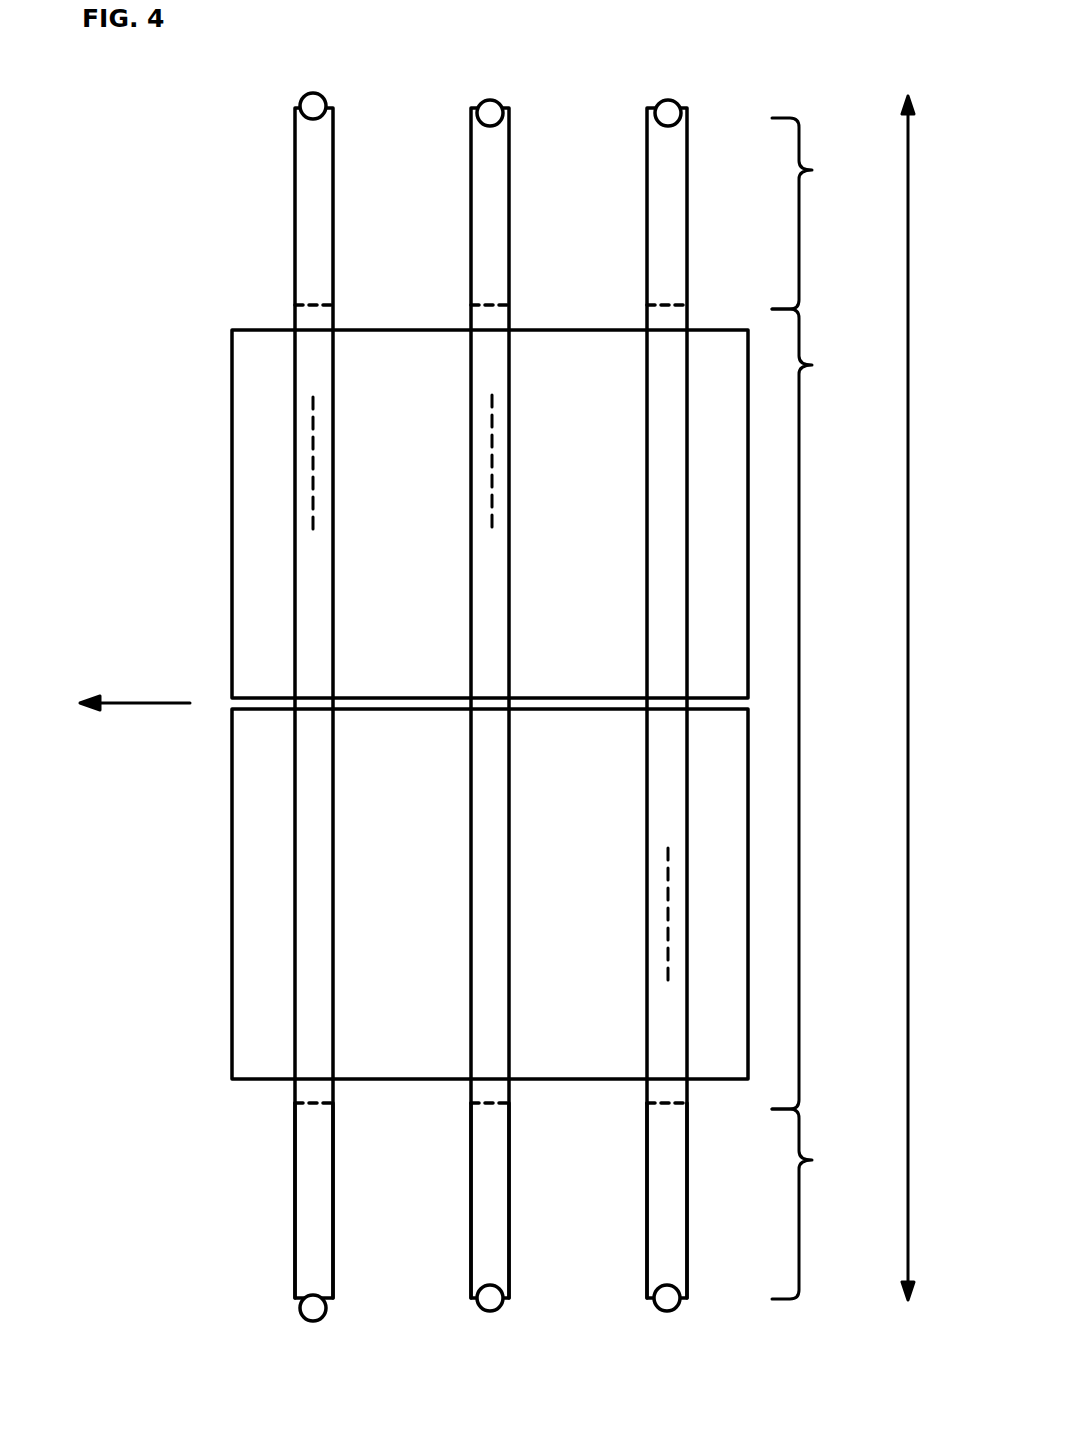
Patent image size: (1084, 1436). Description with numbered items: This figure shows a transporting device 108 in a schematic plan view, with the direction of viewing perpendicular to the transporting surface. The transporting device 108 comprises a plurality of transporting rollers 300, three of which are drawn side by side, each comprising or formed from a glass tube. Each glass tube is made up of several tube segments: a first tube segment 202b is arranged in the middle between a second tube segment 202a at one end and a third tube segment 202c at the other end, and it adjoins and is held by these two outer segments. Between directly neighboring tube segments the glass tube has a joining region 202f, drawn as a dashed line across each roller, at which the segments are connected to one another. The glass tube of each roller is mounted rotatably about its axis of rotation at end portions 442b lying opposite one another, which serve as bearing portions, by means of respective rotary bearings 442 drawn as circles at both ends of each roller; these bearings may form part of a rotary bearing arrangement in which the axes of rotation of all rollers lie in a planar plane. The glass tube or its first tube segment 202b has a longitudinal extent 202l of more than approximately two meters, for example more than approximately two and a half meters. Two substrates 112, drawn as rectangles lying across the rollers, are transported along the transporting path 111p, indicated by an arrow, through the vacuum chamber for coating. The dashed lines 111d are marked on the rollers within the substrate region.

The transporting device 108 is at (827, 72).
The rotary bearings 442 is at (313, 104).
The end portions 442b is at (290, 130).
The transporting rollers 300 is at (297, 1190).
The substrate 112 is at (232, 518).
The joining region 202f is at (295, 304).
The dashed slit lines 111d is at (318, 468).
The transporting path 111p is at (130, 702).
The third tube segment 202c is at (825, 213).
The first tube segment 202b is at (828, 709).
The second tube segment 202a is at (827, 1204).
The longitudinal extent 202l is at (907, 215).